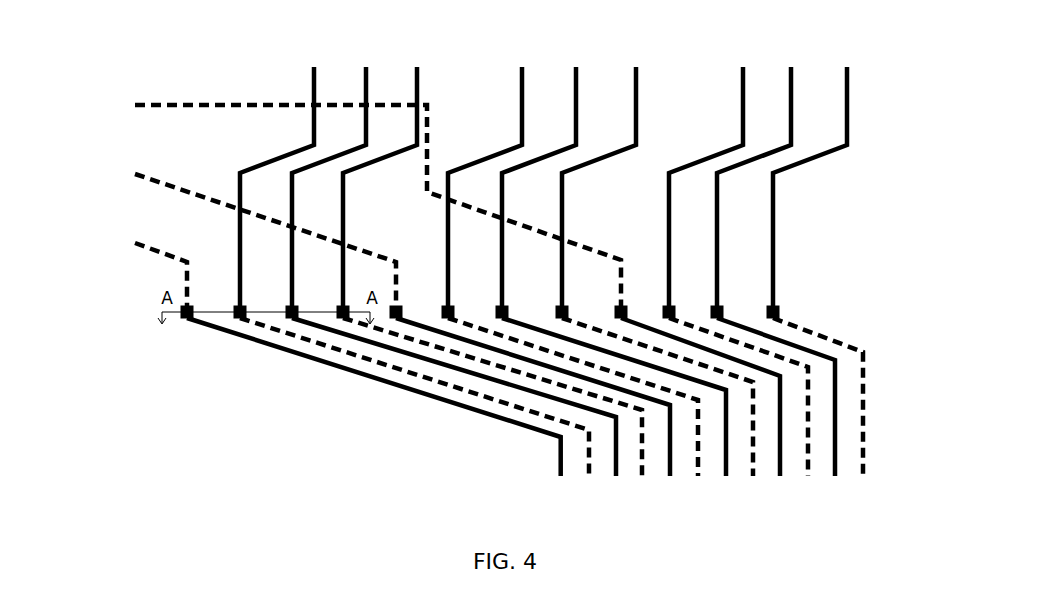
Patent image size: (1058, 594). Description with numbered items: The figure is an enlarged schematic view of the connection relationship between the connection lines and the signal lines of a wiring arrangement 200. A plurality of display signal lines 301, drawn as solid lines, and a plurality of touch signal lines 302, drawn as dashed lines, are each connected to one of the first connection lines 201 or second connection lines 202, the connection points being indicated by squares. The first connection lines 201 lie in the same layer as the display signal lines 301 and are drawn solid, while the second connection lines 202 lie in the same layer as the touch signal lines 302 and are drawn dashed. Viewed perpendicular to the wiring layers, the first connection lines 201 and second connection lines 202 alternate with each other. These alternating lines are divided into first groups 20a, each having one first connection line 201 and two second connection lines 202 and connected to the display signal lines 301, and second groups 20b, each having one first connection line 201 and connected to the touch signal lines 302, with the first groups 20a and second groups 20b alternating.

The wiring structure / device 200 is at (893, 349).
The first connection line 201 is at (410, 393).
The second connection line 202 is at (868, 407).
The display signal line 301 is at (425, 56).
The touch signal line 302 is at (115, 243).
The first group 20a is at (593, 424).
The second group 20b is at (493, 424).